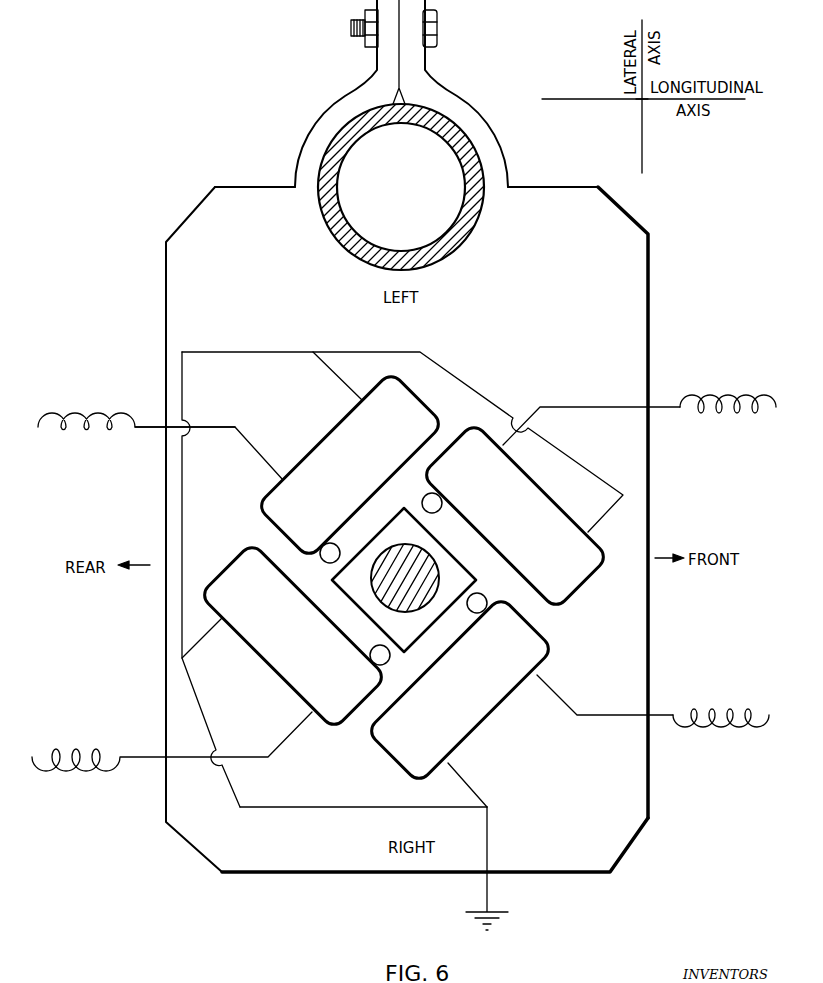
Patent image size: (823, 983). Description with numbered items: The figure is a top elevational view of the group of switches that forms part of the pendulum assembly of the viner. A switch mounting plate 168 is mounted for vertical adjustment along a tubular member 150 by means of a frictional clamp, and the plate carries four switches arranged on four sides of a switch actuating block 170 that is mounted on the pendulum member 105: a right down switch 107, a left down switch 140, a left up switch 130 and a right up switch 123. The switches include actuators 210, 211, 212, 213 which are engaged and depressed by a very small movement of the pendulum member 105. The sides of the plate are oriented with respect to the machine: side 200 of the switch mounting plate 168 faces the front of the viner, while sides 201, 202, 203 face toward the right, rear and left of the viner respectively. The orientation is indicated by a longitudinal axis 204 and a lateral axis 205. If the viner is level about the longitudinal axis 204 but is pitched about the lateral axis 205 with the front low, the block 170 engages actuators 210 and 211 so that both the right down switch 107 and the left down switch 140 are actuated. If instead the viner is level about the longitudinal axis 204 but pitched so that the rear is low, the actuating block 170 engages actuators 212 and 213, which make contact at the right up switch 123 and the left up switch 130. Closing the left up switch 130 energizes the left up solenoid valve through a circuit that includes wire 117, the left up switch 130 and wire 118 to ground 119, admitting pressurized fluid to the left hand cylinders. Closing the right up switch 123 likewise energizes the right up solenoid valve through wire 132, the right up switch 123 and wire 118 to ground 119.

The pendulum member 105 is at (404, 546).
The right down switch 107 is at (552, 496).
The wire 117 is at (155, 429).
The wire 118 is at (292, 808).
The ground 119 is at (503, 912).
The right up switch 123 is at (283, 683).
The left up switch 130 is at (338, 421).
The wire 132 is at (157, 759).
The left down switch 140 is at (488, 722).
The tubular member 150 is at (452, 238).
The switch mounting plate 168 is at (636, 312).
The switch actuating block 170 is at (454, 550).
The side of switch mounting plate 200 is at (408, 525).
The side of switch mounting plate 201 is at (345, 873).
The side of switch mounting plate 202 is at (166, 681).
The side of switch mounting plate 203 is at (531, 185).
The longitudinal axis 204 is at (542, 100).
The lateral axis 205 is at (642, 148).
The actuator 210 is at (422, 499).
The actuator 211 is at (468, 613).
The actuator 212 is at (388, 663).
The actuator 213 is at (330, 564).